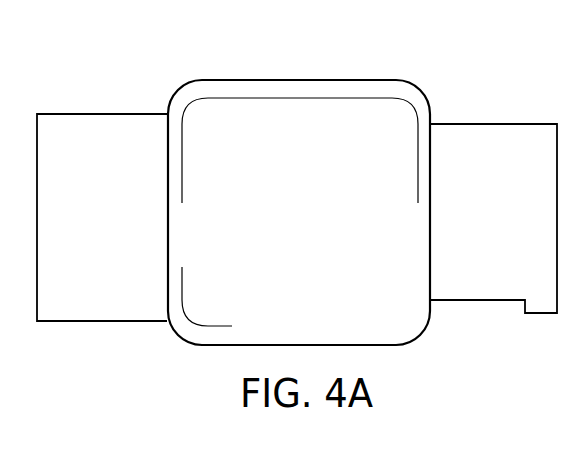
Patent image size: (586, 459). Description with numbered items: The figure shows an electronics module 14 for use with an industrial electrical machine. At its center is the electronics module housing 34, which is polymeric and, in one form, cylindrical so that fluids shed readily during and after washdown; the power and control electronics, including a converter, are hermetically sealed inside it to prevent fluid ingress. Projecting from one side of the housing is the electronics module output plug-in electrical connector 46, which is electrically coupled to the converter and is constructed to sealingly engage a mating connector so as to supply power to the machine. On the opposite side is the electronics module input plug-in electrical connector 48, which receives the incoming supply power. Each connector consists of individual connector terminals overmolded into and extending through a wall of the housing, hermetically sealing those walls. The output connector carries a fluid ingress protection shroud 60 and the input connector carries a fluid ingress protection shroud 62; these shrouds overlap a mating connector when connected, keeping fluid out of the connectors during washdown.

The electronics module 14 is at (243, 27).
The electronics module housing 34 is at (306, 80).
The electronics module output plug-in electrical connector 46 is at (90, 91).
The electronics module input plug-in electrical connector 48 is at (493, 92).
The fluid ingress protection shroud 60 is at (67, 114).
The fluid ingress protection shroud 62 is at (531, 124).